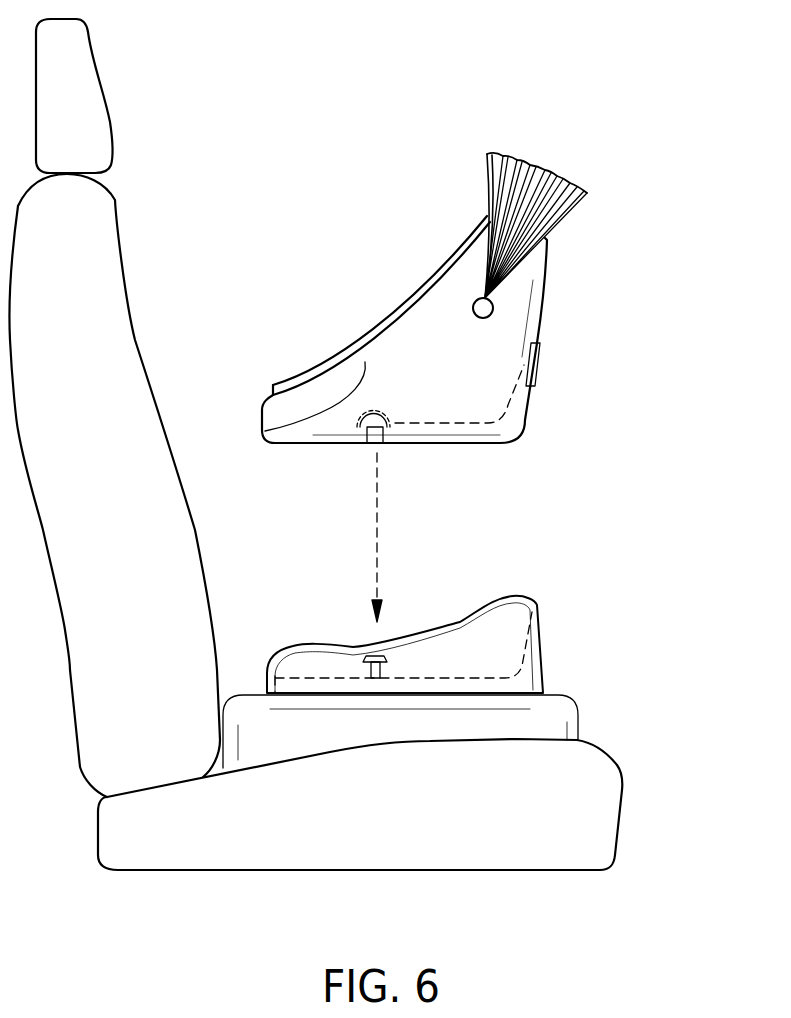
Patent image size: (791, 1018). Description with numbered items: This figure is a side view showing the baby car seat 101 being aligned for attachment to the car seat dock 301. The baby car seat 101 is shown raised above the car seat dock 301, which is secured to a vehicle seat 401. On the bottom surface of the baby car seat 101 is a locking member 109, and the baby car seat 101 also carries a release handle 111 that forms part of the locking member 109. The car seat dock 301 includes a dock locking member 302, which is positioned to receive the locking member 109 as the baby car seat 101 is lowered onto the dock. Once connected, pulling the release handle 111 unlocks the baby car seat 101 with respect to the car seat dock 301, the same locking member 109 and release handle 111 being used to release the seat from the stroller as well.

The baby car seat 101 is at (519, 320).
The locking member 109 is at (383, 430).
The release handle 111 is at (583, 368).
The car seat dock 301 is at (543, 633).
The dock locking member 302 is at (376, 656).
The vehicle seat 401 is at (585, 770).